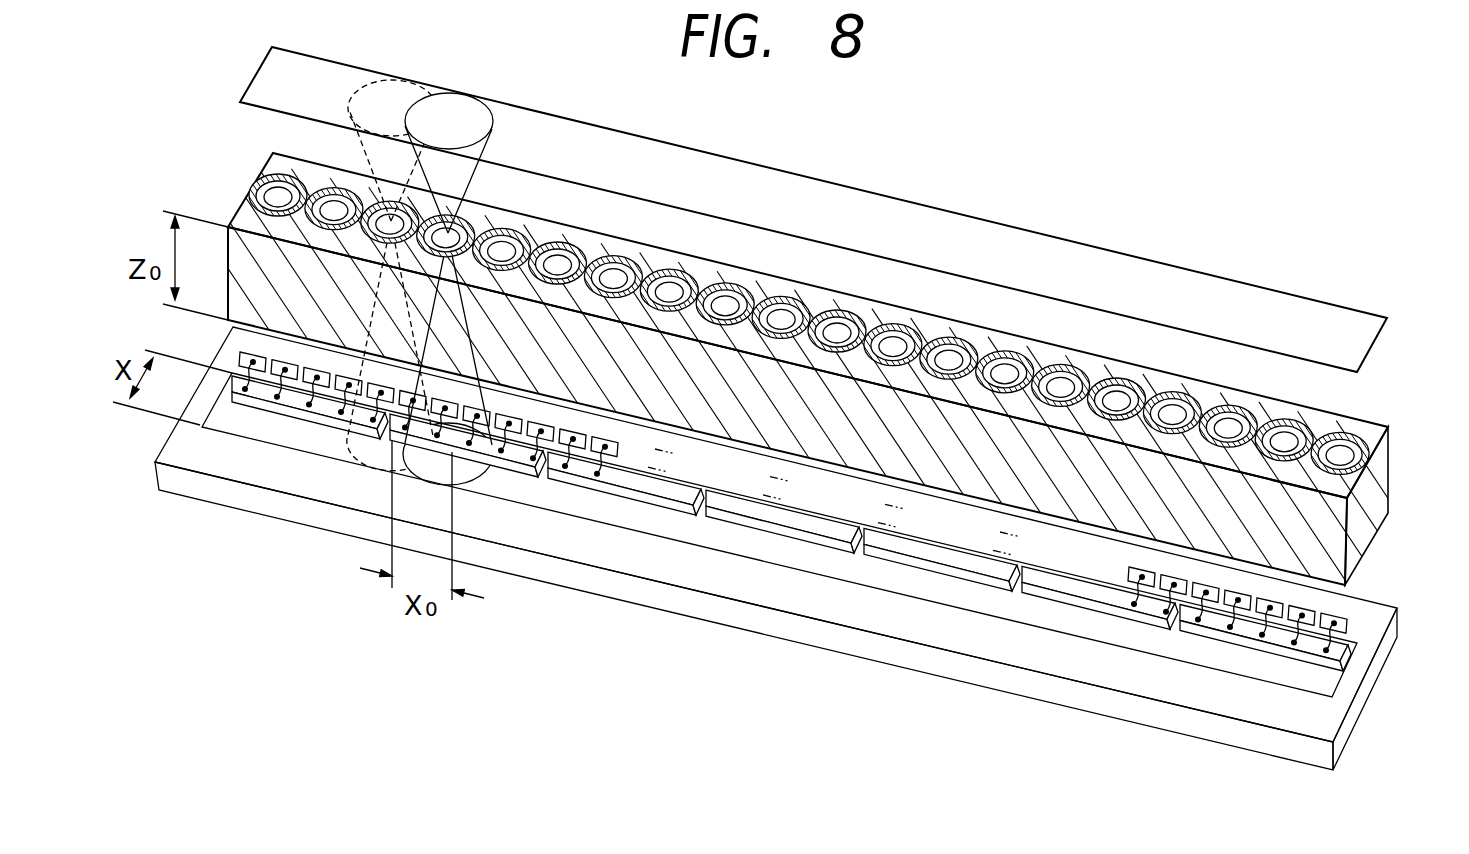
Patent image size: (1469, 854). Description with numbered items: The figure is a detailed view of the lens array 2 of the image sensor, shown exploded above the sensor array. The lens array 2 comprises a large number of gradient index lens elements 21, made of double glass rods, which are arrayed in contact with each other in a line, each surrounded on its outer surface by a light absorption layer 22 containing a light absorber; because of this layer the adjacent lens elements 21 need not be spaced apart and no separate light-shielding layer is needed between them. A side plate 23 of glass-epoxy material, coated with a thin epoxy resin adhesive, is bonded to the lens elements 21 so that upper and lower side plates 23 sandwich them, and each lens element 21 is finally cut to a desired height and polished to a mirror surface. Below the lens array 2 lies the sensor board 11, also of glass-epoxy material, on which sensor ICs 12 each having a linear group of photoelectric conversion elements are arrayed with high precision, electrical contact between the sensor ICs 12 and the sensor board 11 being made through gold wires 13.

The lens array 2 is at (244, 219).
The gradient index lens element 21 is at (258, 181).
The light absorption layer 22 is at (1388, 437).
The side plate 23 is at (1322, 408).
The sensor board 11 is at (790, 598).
The sensor IC 12 is at (963, 565).
The gold wire 13 is at (1352, 627).